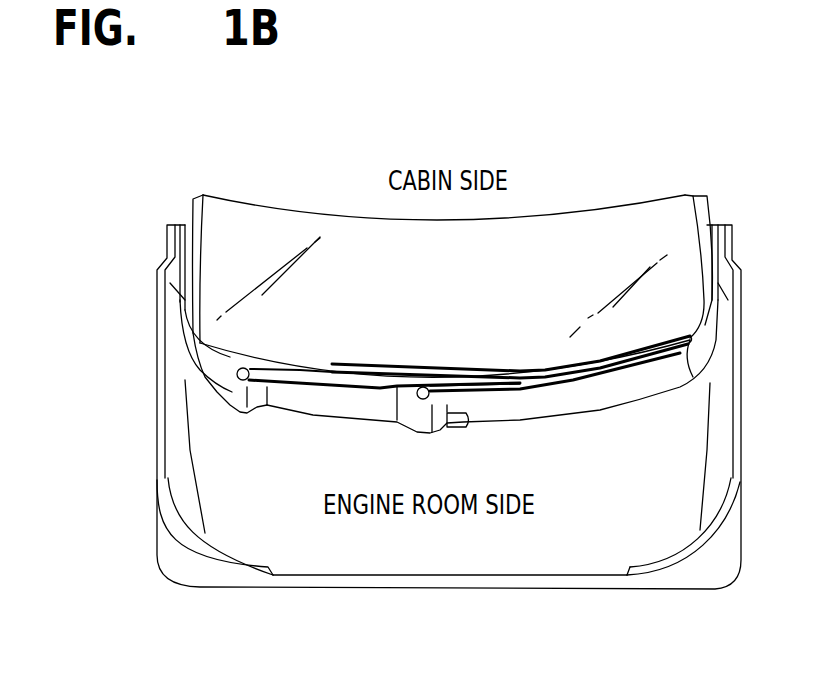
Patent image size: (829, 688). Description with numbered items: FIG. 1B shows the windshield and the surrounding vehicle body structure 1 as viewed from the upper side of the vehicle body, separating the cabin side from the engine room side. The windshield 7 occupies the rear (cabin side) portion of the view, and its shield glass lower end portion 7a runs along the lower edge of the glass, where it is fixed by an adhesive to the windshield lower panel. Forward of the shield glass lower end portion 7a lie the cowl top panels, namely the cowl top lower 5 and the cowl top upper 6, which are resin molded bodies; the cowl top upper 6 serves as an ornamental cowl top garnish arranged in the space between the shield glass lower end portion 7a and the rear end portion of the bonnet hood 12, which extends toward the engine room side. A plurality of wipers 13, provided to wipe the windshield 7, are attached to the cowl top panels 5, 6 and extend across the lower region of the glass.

The vehicle body structure 1 is at (447, 128).
The cowl top lower 5 is at (546, 403).
The cowl top upper 6 is at (546, 403).
The windshield 7 is at (337, 268).
The shield glass lower end portion 7a is at (233, 340).
The bonnet hood 12 is at (635, 500).
The wipers 13 is at (317, 388).